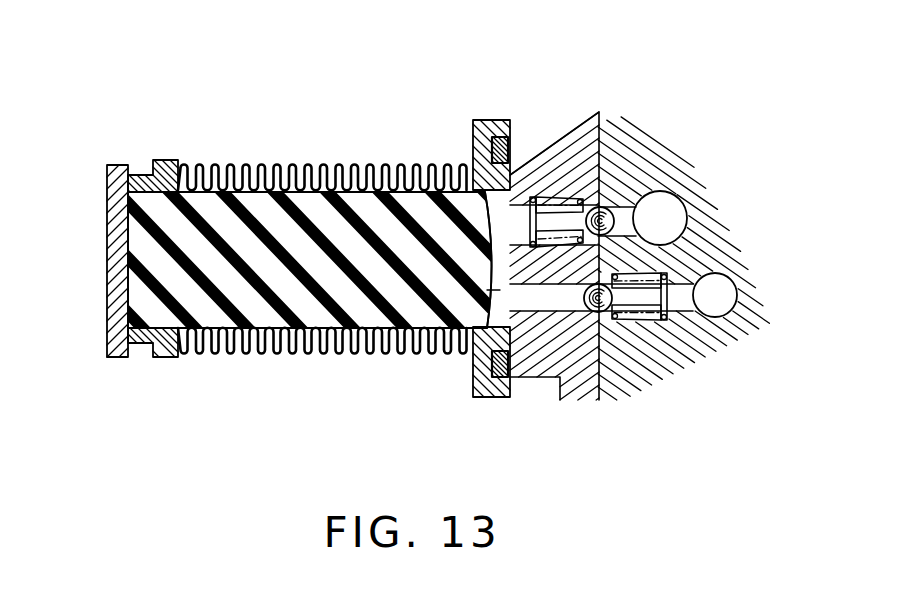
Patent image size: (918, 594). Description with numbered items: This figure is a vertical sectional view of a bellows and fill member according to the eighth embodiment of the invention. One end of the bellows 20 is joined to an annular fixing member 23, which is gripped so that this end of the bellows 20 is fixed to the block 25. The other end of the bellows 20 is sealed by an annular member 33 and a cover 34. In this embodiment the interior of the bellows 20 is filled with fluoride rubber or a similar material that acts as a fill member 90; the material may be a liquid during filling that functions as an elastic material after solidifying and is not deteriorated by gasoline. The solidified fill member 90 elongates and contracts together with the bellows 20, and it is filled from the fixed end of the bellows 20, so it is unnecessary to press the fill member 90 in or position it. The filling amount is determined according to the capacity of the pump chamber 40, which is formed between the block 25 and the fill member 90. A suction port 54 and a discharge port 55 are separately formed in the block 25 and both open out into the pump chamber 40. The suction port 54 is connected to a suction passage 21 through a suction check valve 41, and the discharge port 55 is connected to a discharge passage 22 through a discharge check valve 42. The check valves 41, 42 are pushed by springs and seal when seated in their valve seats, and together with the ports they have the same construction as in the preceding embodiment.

The bellows 20 is at (212, 160).
The suction passage 21 is at (662, 208).
The discharge passage 22 is at (717, 302).
The annular fixing member 23 is at (492, 398).
The block 25 is at (565, 128).
The annular member 33 is at (160, 358).
The cover 34 is at (107, 352).
The pump chamber 40 is at (487, 285).
The suction check valve 41 is at (610, 207).
The discharge check valve 42 is at (607, 322).
The suction port 54 is at (525, 205).
The discharge port 55 is at (558, 330).
The fill member 90 is at (273, 313).